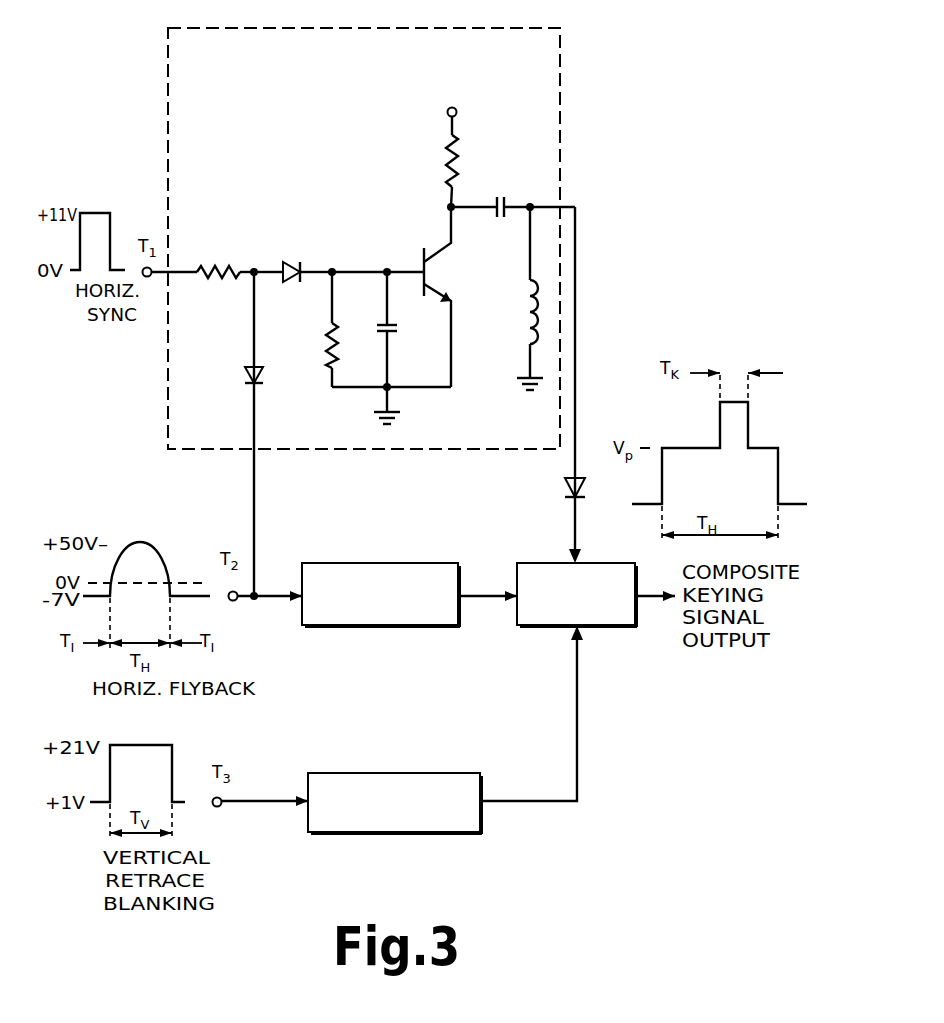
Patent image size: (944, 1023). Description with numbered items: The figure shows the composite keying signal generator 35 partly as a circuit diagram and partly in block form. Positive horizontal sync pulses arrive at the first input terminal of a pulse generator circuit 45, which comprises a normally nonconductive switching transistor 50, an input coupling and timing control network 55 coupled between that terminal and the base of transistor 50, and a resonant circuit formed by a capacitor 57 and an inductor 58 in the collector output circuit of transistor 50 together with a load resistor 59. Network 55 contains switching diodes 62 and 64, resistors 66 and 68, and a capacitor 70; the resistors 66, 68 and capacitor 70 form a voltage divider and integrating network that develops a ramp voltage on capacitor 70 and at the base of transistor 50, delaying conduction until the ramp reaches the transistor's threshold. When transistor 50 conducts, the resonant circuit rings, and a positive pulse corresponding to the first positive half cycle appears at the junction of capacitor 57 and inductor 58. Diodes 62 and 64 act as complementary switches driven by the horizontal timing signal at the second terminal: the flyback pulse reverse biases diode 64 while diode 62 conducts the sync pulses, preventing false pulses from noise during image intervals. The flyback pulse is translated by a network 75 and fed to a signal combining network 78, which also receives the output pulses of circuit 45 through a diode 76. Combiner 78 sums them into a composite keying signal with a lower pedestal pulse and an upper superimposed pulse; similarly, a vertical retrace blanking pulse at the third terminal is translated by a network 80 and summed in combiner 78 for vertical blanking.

The composite keying signal generator 35 is at (652, 97).
The pulse generator circuit 45 is at (281, 115).
The input coupling and timing control network 55 is at (313, 232).
The switching transistor 50 is at (458, 284).
The capacitor 57 is at (505, 203).
The inductor 58 is at (517, 287).
The load resistor 59 is at (449, 151).
The switching diode 62 is at (289, 283).
The switching diode 64 is at (246, 377).
The resistor 66 is at (226, 270).
The resistor 68 is at (340, 327).
The capacitor 70 is at (404, 328).
The signal translating network 75 is at (409, 563).
The diode 76 is at (582, 490).
The signal combining network 78 is at (556, 562).
The signal translating network 80 is at (466, 770).